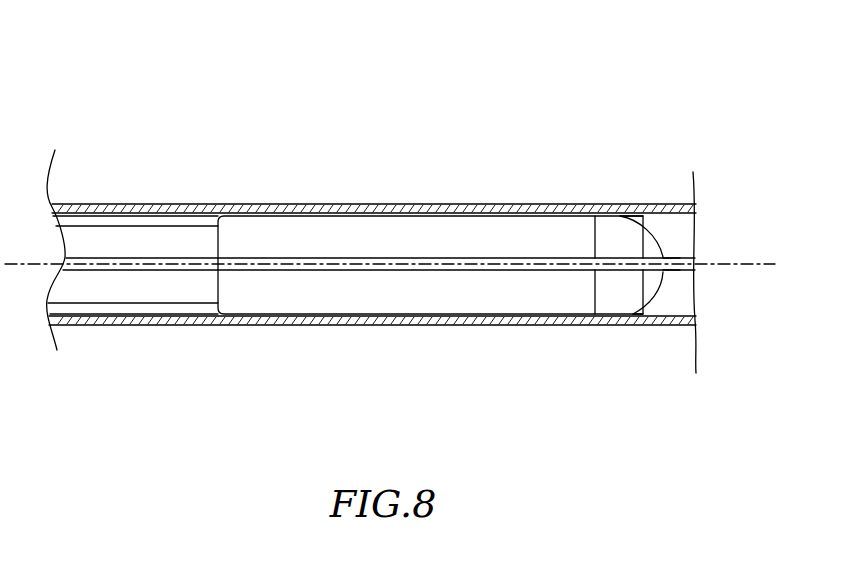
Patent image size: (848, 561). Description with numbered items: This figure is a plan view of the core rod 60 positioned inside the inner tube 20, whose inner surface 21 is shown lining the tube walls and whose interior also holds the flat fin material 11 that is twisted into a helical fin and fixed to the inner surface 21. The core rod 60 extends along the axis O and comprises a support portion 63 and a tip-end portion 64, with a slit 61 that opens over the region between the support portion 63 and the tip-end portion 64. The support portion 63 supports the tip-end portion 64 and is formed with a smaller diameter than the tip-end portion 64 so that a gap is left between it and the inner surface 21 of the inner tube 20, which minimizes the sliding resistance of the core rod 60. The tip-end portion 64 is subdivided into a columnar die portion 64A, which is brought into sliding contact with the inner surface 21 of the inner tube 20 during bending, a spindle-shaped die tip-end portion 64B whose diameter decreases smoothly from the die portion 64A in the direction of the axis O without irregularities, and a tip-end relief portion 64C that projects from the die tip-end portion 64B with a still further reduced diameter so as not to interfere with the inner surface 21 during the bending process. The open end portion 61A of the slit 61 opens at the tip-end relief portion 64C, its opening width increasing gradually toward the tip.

The core rod 60 is at (628, 53).
The support portion 63 is at (180, 252).
The slit 61 is at (397, 262).
The open end portion 61A is at (672, 278).
The tip-end portion 64 is at (732, 97).
The die portion 64A is at (580, 212).
The die tip-end portion 64B is at (626, 213).
The tip-end relief portion 64C is at (663, 250).
The inner tube 20 is at (137, 328).
The inner surface 21 is at (193, 316).
The fin material 11 is at (675, 275).
The axis O is at (745, 262).